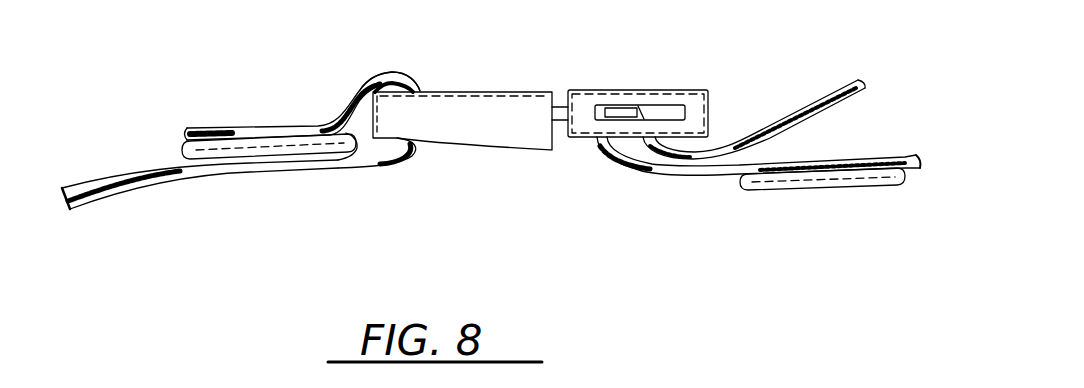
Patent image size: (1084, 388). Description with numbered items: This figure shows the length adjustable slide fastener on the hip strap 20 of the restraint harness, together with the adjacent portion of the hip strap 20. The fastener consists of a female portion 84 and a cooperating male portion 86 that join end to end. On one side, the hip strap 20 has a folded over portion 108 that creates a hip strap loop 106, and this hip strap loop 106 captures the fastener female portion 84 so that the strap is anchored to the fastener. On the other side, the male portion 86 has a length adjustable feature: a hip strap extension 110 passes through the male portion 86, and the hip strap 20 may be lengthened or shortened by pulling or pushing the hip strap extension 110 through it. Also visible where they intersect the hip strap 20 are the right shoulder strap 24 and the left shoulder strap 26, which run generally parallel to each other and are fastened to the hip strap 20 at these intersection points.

The hip strap 20 is at (105, 186).
The right shoulder strap 24 is at (182, 142).
The left shoulder strap 26 is at (822, 192).
The female portion 84 is at (467, 152).
The male portion 86 is at (632, 90).
The hip strap loop 106 is at (392, 72).
The folded over portion 108 is at (262, 127).
The hip strap extension 110 is at (805, 108).